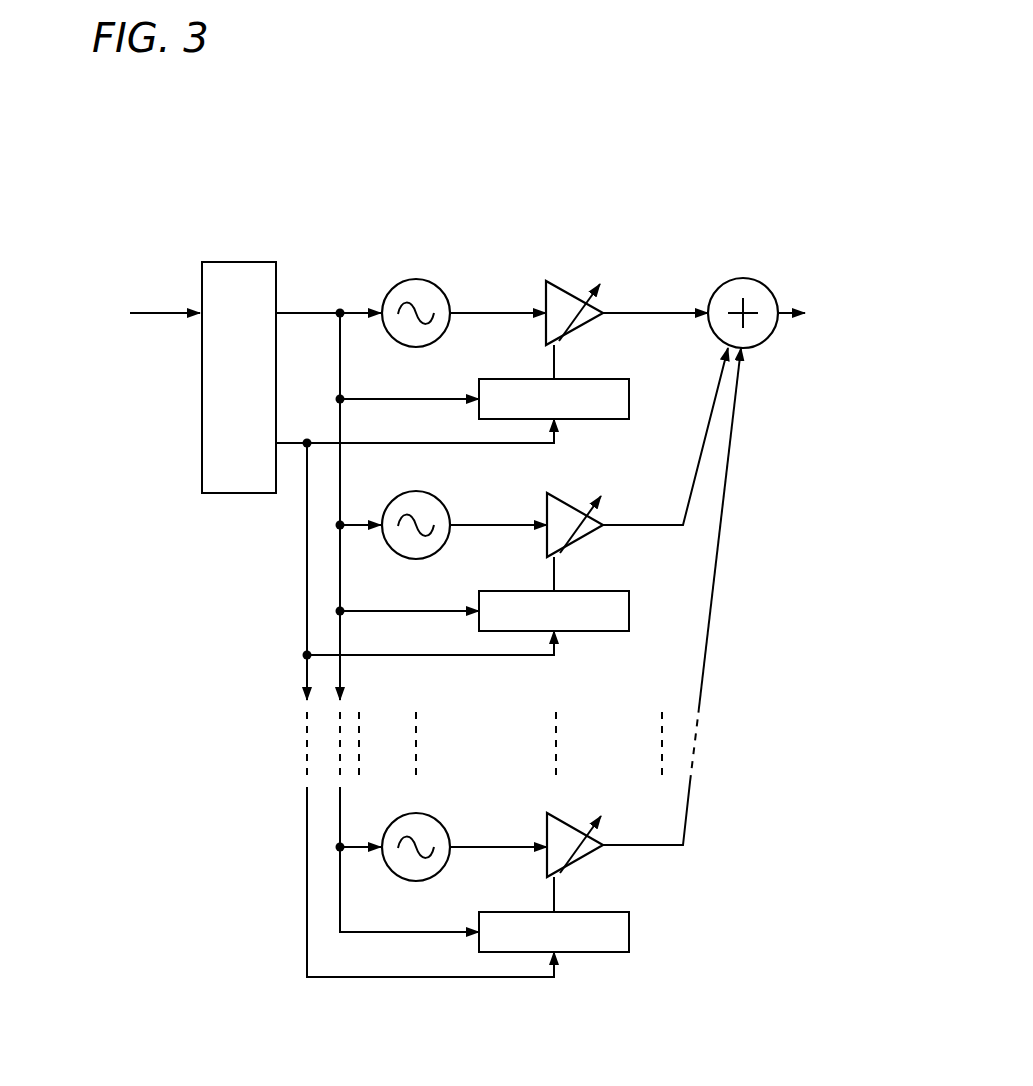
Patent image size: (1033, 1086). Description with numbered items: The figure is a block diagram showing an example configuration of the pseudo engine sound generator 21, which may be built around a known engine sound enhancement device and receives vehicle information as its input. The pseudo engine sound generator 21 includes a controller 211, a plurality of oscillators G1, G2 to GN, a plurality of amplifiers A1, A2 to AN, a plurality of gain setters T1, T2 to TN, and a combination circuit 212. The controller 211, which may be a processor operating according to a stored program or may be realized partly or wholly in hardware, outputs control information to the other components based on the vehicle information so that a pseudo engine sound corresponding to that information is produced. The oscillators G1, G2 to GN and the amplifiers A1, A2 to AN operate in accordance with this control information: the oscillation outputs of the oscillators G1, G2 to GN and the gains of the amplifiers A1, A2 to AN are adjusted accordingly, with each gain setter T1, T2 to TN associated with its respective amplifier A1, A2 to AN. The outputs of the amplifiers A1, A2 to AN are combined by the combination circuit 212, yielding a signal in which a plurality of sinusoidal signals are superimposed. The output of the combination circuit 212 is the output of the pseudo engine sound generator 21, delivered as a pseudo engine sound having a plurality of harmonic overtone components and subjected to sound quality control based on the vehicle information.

The pseudo engine sound generator 21 is at (606, 200).
The controller 211 is at (228, 262).
The combination circuit 212 is at (742, 279).
The oscillator G1 is at (416, 279).
The oscillator G2 is at (440, 494).
The oscillator GN is at (440, 816).
The amplifier A1 is at (576, 293).
The amplifier A2 is at (576, 505).
The amplifier AN is at (572, 826).
The gain setter T1 is at (629, 397).
The gain setter T2 is at (629, 609).
The gain setter TN is at (629, 931).